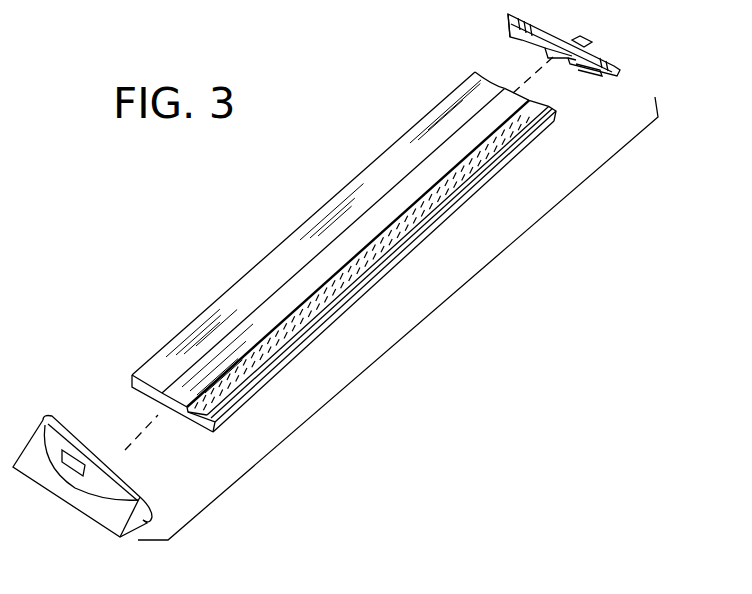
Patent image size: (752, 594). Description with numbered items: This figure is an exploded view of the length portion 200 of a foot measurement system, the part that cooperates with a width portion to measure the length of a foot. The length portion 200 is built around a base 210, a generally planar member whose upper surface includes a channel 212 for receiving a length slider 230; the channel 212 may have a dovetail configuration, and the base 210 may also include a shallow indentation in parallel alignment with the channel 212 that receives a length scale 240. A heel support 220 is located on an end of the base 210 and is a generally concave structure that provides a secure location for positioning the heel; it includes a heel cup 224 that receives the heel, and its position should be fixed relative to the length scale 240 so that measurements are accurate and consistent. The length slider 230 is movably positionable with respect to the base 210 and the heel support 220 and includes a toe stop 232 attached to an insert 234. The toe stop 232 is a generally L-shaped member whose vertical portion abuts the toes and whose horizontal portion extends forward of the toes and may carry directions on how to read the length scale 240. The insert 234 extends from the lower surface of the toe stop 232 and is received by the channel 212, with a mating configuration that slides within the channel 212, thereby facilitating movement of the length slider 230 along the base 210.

The length portion 200 is at (342, 140).
The base 210 is at (468, 176).
The channel 212 is at (263, 318).
The heel support 220 is at (53, 497).
The heel cup 224 is at (62, 431).
The length slider 230 is at (603, 68).
The toe stop 232 is at (592, 70).
The insert 234 is at (582, 42).
The length scale 240 is at (353, 268).